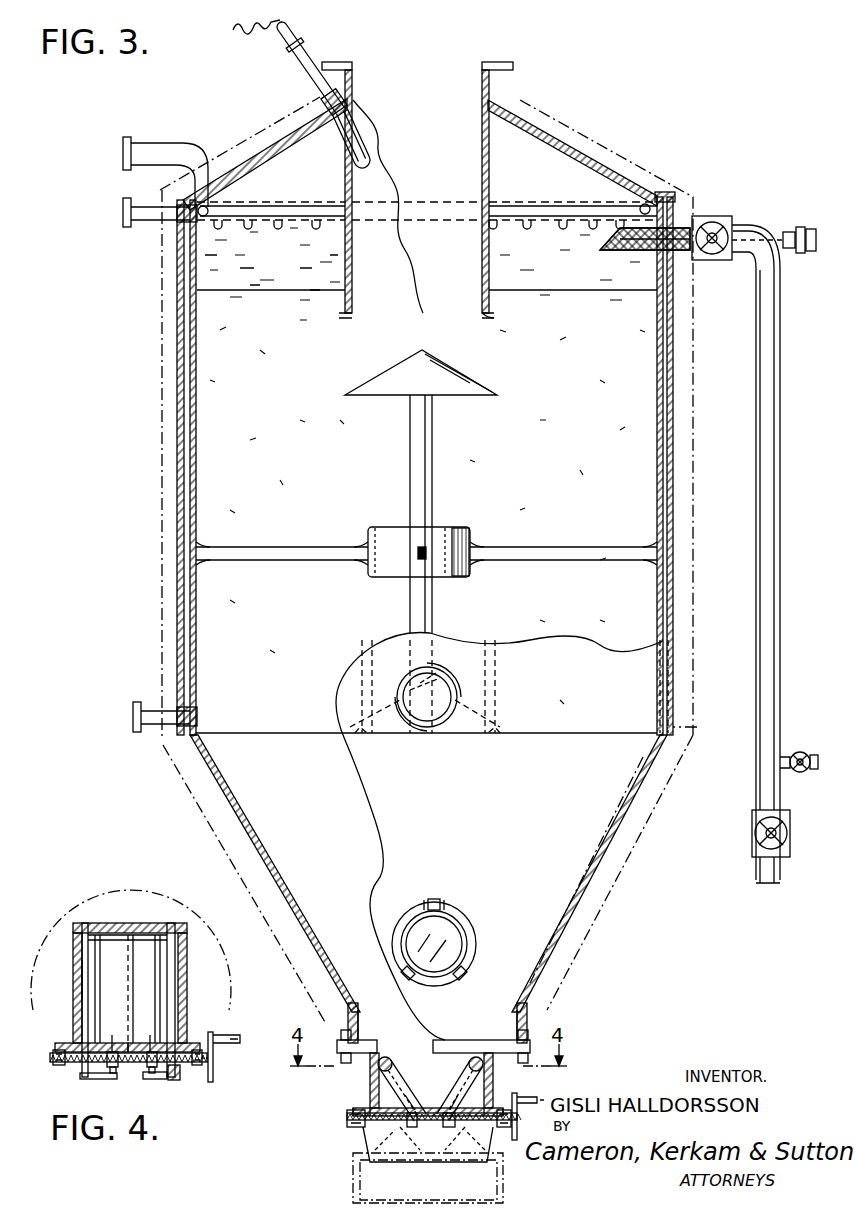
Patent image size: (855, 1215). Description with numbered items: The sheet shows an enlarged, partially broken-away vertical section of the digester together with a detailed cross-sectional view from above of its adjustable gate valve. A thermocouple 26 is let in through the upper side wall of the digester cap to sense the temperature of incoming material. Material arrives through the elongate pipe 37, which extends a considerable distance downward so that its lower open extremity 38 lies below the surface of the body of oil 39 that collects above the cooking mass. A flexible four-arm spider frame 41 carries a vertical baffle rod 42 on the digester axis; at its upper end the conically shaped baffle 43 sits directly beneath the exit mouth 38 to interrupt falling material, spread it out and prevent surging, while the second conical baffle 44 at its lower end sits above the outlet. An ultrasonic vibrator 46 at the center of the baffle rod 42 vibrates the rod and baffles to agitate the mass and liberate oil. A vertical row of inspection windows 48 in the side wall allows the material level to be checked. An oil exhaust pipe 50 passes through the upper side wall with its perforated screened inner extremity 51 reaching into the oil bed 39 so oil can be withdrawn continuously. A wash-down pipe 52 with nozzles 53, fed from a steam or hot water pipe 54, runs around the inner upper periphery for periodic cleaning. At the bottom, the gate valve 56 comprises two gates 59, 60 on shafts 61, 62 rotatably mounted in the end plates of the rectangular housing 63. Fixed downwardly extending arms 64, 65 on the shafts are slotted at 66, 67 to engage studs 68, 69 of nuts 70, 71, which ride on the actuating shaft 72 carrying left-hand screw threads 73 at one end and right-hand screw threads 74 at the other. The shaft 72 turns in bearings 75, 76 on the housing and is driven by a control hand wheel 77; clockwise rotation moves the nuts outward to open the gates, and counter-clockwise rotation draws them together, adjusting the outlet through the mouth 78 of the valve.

In FIG. 3, the thermocouple 26 is at (307, 75).
In FIG. 3, the elongate pipe 37 is at (486, 180).
In FIG. 3, the lower open extremity 38 is at (484, 317).
In FIG. 3, the body of oil 39 is at (283, 279).
In FIG. 3, the spider frame 41 is at (280, 548).
In FIG. 3, the baffle rod 42 is at (430, 441).
In FIG. 3, the conically shaped baffle 43 is at (386, 373).
In FIG. 3, the second conical baffle 44 is at (400, 708).
In FIG. 3, the ultrasonic vibrator 46 is at (386, 562).
In FIG. 3, the inspection windows 48 is at (455, 683).
In FIG. 3, the oil exhaust pipe 50 is at (757, 460).
In FIG. 3, the perforated screened inner extremity 51 is at (612, 249).
In FIG. 3, the wash-down pipe 52 is at (268, 206).
In FIG. 3, the nozzles 53 is at (252, 224).
In FIG. 3, the steam or hot water pipe 54 is at (151, 152).
In FIG. 3, the gate valve 56 is at (420, 1114).
In FIG. 4, the gate valve 56 is at (147, 1005).
In FIG. 3, the gate 59 is at (447, 1128).
In FIG. 4, the gate 59 is at (156, 950).
In FIG. 3, the gate 60 is at (415, 1128).
In FIG. 4, the gate 60 is at (106, 936).
In FIG. 3, the shaft 61 is at (491, 1073).
In FIG. 4, the shaft 61 is at (187, 963).
In FIG. 3, the shaft 62 is at (372, 1069).
In FIG. 4, the shaft 62 is at (83, 996).
In FIG. 3, the rectangular housing 63 is at (372, 1090).
In FIG. 4, the rectangular housing 63 is at (76, 960).
In FIG. 3, the arm 64 is at (470, 1082).
In FIG. 4, the arm 64 is at (176, 1080).
In FIG. 3, the arm 65 is at (381, 1060).
In FIG. 4, the arm 65 is at (95, 1079).
In FIG. 3, the slot 66 is at (456, 1108).
In FIG. 4, the slot 66 is at (156, 1080).
In FIG. 3, the slot 67 is at (411, 1100).
In FIG. 3, the stud 68 is at (442, 1127).
In FIG. 4, the stud 68 is at (151, 1073).
In FIG. 3, the stud 69 is at (405, 1124).
In FIG. 4, the stud 69 is at (113, 1073).
In FIG. 3, the nut 70 is at (457, 1120).
In FIG. 4, the nut 70 is at (148, 1052).
In FIG. 3, the nut 71 is at (417, 1126).
In FIG. 4, the nut 71 is at (114, 1052).
In FIG. 3, the actuating shaft 72 is at (432, 1113).
In FIG. 4, the actuating shaft 72 is at (128, 1063).
In FIG. 3, the left-hand screw threads 73 is at (491, 1106).
In FIG. 4, the left-hand screw threads 73 is at (148, 1045).
In FIG. 3, the right-hand screw threads 74 is at (364, 1109).
In FIG. 4, the right-hand screw threads 74 is at (96, 1045).
In FIG. 3, the bearing 75 is at (510, 1122).
In FIG. 4, the bearing 75 is at (198, 1066).
In FIG. 3, the bearing 76 is at (350, 1118).
In FIG. 4, the bearing 76 is at (58, 1067).
In FIG. 3, the control hand wheel 77 is at (530, 1098).
In FIG. 4, the control hand wheel 77 is at (228, 1038).
In FIG. 3, the mouth 78 is at (432, 1164).